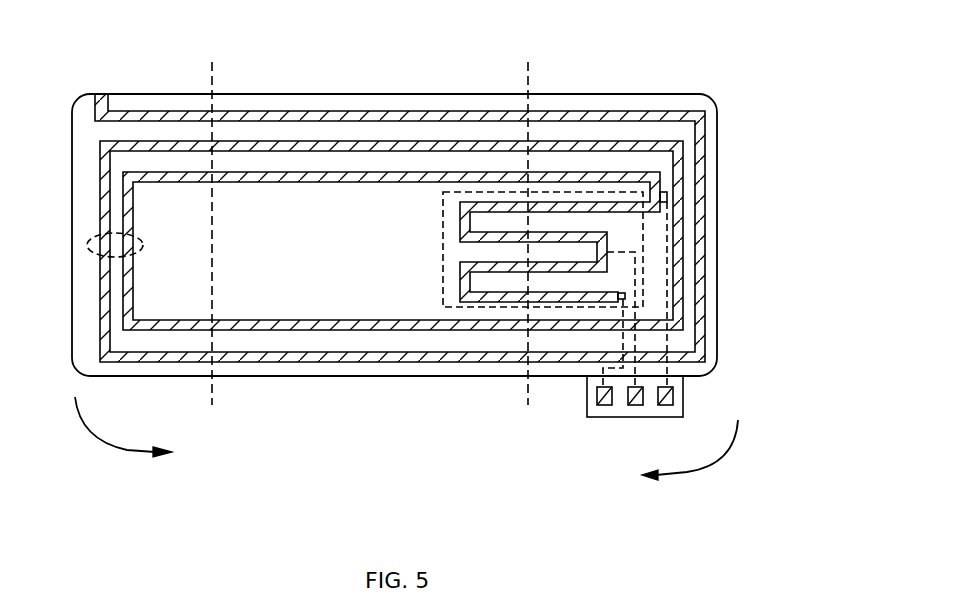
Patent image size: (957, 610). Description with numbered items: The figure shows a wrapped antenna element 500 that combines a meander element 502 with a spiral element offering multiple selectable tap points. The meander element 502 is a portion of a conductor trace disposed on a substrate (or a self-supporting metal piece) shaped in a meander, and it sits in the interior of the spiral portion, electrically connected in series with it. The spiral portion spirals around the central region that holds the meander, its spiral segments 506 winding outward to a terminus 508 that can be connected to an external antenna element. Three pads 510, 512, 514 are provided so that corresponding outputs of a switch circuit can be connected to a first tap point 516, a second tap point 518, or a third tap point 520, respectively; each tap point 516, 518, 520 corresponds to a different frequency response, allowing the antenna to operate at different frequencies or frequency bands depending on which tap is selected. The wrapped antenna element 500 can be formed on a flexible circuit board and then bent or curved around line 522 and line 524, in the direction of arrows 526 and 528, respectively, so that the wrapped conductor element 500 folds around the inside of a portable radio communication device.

The wrapped antenna element 500 is at (801, 34).
The meander element 502 is at (443, 252).
The spiral segments 506 is at (143, 245).
The terminus 508 is at (108, 102).
The first pad 510 is at (597, 395).
The second pad 512 is at (635, 405).
The third pad 514 is at (673, 397).
The first tap point 516 is at (625, 296).
The second tap point 518 is at (607, 252).
The third tap point 520 is at (667, 199).
The bend line 522 is at (212, 74).
The bend line 524 is at (528, 74).
The arrow 526 is at (137, 452).
The arrow 528 is at (675, 473).